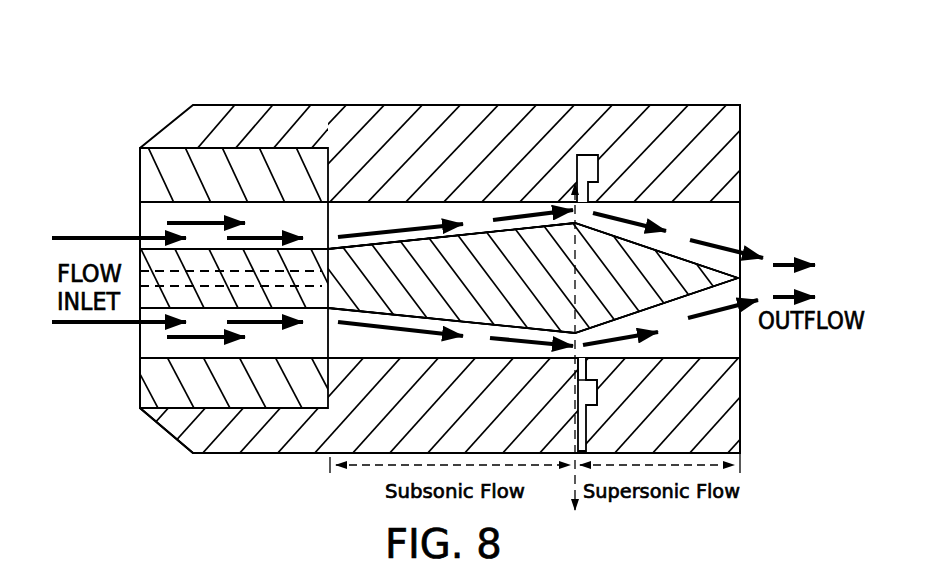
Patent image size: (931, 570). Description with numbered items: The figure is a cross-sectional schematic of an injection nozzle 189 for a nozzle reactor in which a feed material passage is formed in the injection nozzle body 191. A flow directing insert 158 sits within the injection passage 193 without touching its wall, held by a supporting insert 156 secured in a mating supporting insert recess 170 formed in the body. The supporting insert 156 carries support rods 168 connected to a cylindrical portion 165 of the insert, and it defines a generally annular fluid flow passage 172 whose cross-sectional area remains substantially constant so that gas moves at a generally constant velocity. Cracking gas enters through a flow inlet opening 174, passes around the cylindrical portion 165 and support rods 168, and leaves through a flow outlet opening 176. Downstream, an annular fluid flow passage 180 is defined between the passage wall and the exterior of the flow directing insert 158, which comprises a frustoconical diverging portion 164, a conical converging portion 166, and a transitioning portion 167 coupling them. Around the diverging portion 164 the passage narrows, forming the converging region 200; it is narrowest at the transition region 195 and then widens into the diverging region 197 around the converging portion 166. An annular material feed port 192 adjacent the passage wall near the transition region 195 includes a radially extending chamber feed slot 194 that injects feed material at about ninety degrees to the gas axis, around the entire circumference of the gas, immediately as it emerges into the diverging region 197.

The supporting insert 156 is at (172, 185).
The flow directing insert 158 is at (484, 221).
The diverging portion 164 is at (447, 288).
The cylindrical portion 165 is at (208, 305).
The converging portion 166 is at (637, 280).
The transitioning portion 167 is at (598, 400).
The support rod 168 is at (268, 283).
The supporting insert recess 170 is at (176, 400).
The fluid flow passage 172 is at (175, 204).
The flow inlet opening 174 is at (137, 338).
The flow outlet opening 176 is at (328, 338).
The annular fluid flow passage 180 is at (457, 350).
The nozzle 189 is at (567, 65).
The injection nozzle body 191 is at (675, 122).
The annular material feed port 192 is at (617, 427).
The injection passage 193 is at (697, 203).
The chamber feed slot 194 is at (577, 375).
The transition region 195 is at (601, 203).
The diverging region 197 is at (670, 227).
The converging region 200 is at (355, 220).